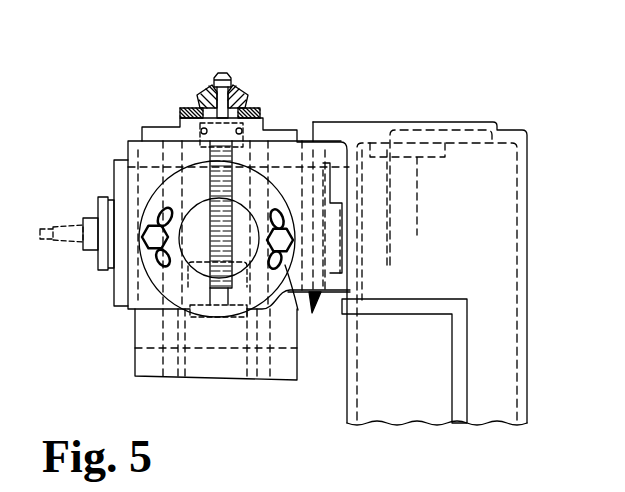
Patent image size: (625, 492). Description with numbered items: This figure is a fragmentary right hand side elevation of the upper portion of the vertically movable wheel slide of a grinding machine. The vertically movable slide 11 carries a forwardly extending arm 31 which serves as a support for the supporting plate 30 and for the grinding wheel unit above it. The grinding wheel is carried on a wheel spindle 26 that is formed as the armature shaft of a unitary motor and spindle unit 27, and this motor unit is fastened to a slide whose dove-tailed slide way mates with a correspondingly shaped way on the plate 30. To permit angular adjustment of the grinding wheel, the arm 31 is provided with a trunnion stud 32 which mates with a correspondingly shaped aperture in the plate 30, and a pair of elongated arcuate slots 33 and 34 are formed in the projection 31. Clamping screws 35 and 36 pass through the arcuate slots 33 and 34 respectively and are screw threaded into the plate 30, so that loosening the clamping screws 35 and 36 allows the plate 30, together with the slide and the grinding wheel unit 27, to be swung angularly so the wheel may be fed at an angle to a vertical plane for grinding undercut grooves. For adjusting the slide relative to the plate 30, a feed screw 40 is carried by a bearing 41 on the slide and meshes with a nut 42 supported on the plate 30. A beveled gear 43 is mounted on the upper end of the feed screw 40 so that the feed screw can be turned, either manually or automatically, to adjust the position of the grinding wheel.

The vertically movable slide 11 is at (522, 286).
The wheel spindle 26 is at (68, 225).
The unitary motor and spindle unit 27 is at (118, 172).
The supporting plate 30 is at (140, 133).
The forwardly extending arm 31 is at (157, 279).
The trunnion stud 32 is at (203, 220).
The elongated arcuate slot 33 is at (160, 210).
The elongated arcuate slot 34 is at (288, 257).
The clamping screw 35 is at (146, 233).
The clamping screw 36 is at (311, 295).
The feed screw 40 is at (197, 162).
The bearing 41 is at (203, 128).
The nut 42 is at (237, 215).
The beveled gear 43 is at (208, 95).